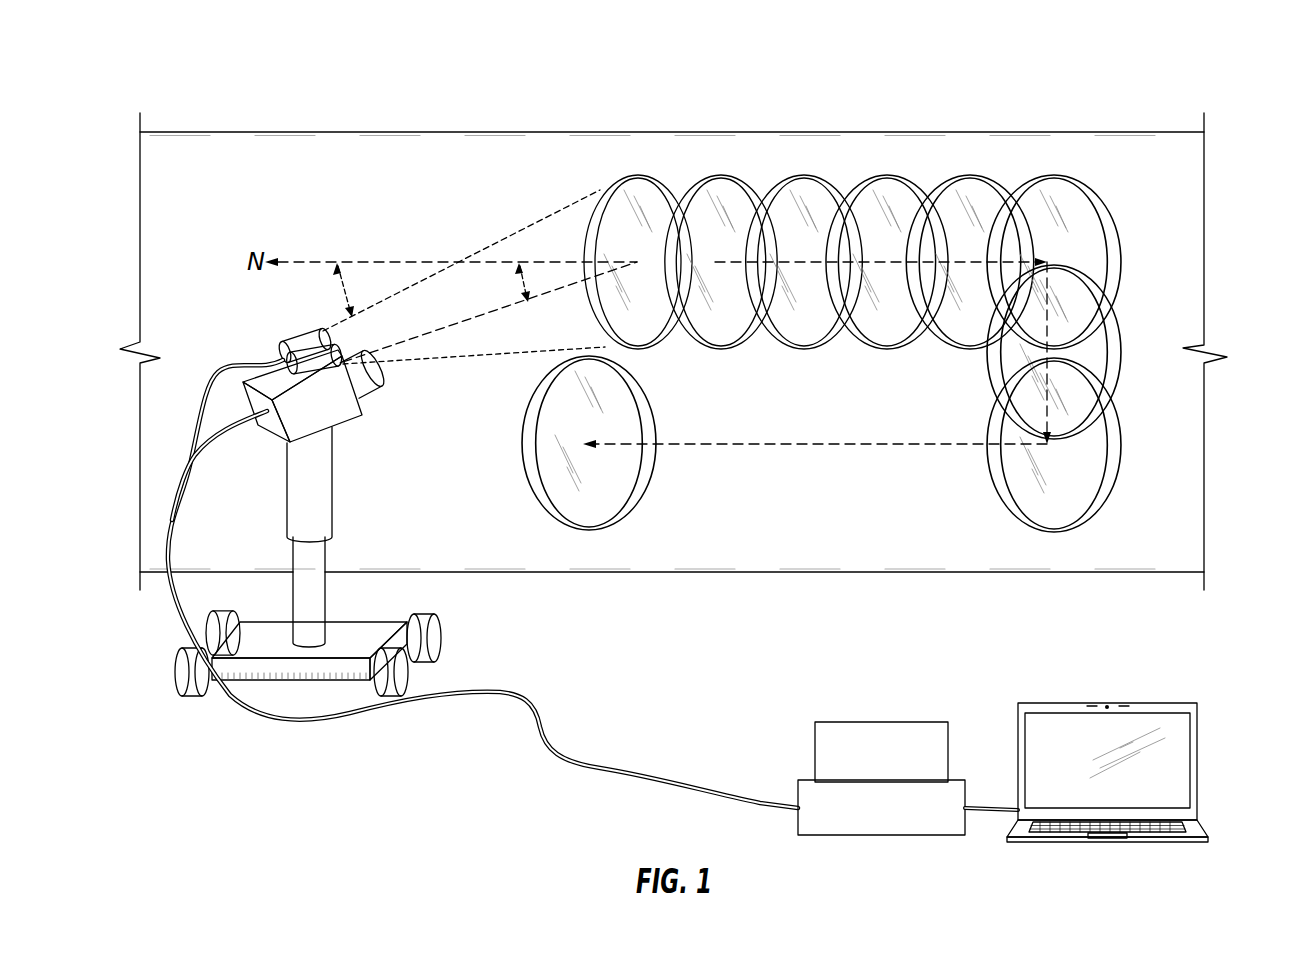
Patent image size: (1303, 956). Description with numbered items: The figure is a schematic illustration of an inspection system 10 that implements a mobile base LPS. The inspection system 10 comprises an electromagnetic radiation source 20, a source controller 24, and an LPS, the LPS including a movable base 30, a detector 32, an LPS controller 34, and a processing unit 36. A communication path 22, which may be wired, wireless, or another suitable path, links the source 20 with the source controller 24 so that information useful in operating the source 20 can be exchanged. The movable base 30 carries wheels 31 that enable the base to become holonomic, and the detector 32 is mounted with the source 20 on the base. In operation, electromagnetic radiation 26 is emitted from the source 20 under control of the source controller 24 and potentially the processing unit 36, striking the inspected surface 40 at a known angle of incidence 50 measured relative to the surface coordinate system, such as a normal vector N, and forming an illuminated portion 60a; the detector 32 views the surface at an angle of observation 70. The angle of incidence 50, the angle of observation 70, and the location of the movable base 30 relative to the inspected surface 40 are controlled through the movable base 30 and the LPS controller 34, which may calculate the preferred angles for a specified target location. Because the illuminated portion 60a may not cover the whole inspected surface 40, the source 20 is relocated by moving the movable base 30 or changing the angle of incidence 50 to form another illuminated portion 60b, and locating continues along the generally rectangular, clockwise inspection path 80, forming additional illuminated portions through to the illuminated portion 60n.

The inspection system 10 is at (150, 86).
The electromagnetic radiation source 20 is at (294, 332).
The communication path 22 is at (547, 725).
The source controller 24 is at (815, 751).
The electromagnetic radiation 26 is at (537, 236).
The movable base 30 is at (298, 480).
The wheels 31 is at (433, 640).
The detector 32 is at (332, 412).
The LPS controller 34 is at (798, 794).
The processing unit 36 is at (1197, 762).
The inspected surface 40 is at (840, 547).
The angle of incidence 50 is at (345, 289).
The illuminated portion 60a is at (639, 175).
The illuminated portion 60b is at (722, 175).
The illuminated portion 60n is at (540, 448).
The angle of observation 70 is at (523, 284).
The inspection path 80 is at (836, 442).